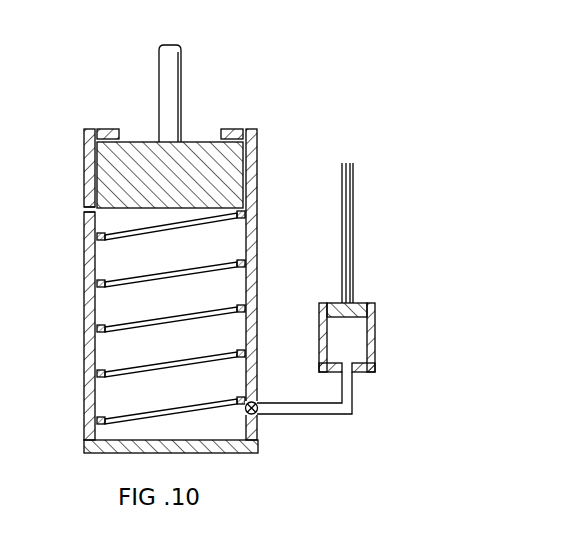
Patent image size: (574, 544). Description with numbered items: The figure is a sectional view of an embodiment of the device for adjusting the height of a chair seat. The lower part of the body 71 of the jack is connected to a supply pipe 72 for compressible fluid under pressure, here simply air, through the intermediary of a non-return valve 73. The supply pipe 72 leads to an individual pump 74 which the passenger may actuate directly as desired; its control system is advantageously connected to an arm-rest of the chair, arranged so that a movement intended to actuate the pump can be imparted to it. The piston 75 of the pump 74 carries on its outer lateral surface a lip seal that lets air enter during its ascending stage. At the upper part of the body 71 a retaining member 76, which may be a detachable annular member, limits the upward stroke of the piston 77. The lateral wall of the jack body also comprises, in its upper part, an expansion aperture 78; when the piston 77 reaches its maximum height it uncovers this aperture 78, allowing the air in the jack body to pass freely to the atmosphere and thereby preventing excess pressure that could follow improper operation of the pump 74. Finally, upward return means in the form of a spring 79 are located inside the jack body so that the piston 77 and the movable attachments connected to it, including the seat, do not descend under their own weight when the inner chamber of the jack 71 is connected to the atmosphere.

The body of the jack 71 is at (84, 372).
The supply pipe 72 is at (303, 415).
The non-return valve 73 is at (259, 402).
The individual pump 74 is at (378, 335).
The piston of the pump 75 is at (356, 302).
The retaining member 76 is at (235, 128).
The piston 77 is at (134, 145).
The expansion aperture 78 is at (80, 212).
The spring 79 is at (173, 277).